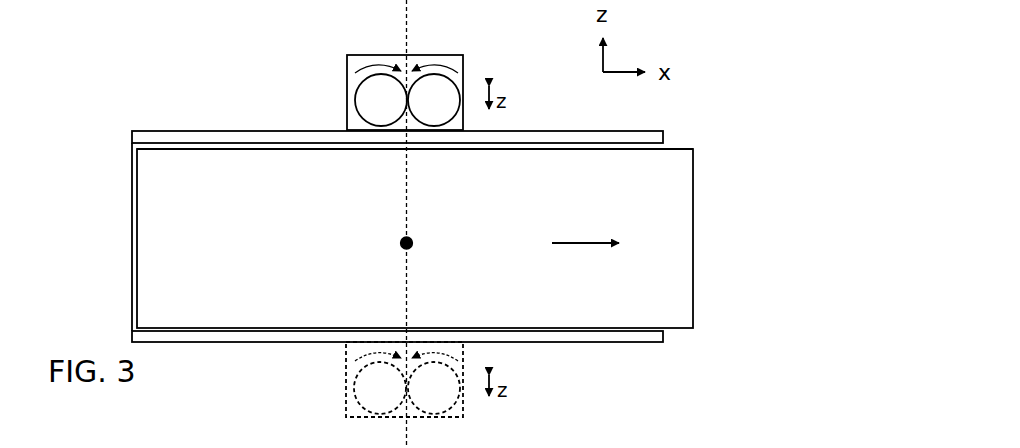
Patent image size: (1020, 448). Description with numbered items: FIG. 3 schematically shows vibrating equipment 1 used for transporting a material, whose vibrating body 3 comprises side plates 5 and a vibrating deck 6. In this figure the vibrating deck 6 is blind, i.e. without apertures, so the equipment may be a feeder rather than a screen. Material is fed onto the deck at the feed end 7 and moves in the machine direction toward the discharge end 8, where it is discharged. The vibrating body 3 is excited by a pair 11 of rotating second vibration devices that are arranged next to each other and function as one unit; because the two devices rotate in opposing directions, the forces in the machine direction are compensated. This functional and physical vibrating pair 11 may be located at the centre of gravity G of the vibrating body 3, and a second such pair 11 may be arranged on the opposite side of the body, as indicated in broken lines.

The vibrating equipment 1 is at (124, 77).
The vibrating body 3 is at (134, 193).
The side plates 5 is at (325, 135).
The vibrating deck 6 is at (226, 165).
The feed end 7 is at (106, 133).
The discharge end 8 is at (720, 148).
The pair of rotating second vibration devices 11 is at (355, 55).
The centre of gravity G is at (399, 243).